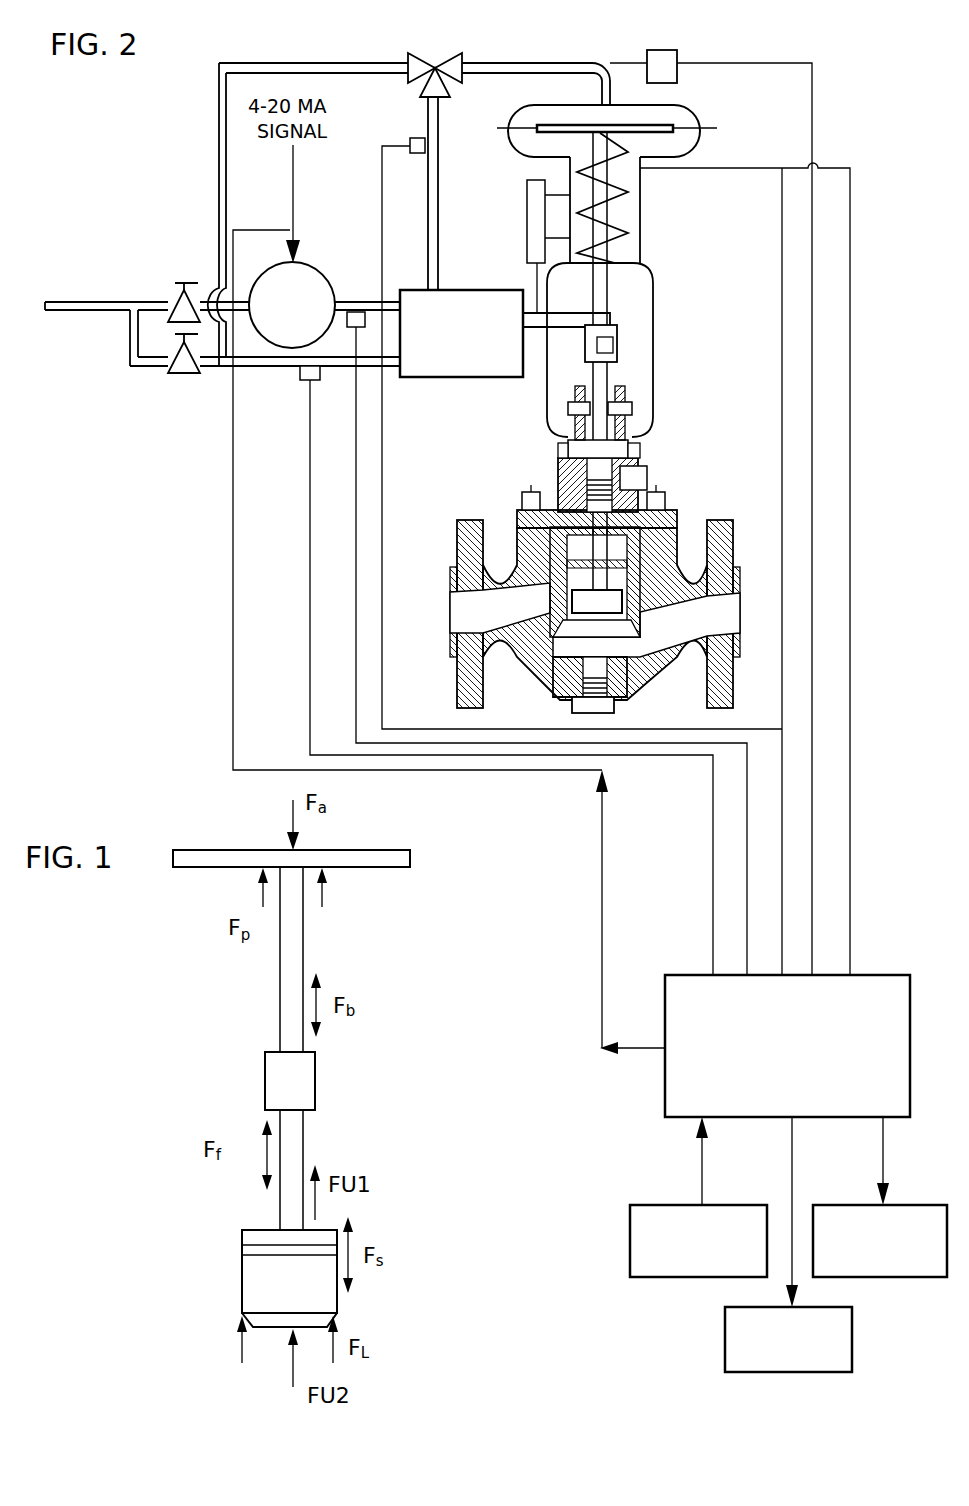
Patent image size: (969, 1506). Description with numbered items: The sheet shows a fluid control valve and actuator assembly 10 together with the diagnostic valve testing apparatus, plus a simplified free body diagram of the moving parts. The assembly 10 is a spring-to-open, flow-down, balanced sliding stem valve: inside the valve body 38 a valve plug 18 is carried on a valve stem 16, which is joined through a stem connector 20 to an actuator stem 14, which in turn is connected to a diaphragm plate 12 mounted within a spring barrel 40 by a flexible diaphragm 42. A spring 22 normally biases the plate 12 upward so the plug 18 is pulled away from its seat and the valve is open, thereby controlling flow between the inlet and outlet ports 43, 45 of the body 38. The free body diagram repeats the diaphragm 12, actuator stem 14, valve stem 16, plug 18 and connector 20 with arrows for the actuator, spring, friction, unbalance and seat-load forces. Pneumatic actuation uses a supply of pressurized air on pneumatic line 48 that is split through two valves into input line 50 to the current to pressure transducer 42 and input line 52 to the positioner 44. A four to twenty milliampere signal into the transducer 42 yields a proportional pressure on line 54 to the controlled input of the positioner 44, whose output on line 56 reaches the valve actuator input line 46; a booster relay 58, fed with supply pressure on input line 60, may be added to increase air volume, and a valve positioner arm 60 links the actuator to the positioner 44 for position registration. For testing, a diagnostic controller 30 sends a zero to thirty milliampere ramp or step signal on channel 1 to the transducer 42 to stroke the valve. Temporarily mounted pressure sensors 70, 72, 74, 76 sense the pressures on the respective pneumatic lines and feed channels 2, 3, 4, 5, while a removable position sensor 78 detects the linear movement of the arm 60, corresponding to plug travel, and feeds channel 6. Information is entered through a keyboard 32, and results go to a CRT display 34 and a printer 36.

In FIG. 2, the fluid control valve and actuator assembly 10 is at (753, 50).
In FIG. 2, the diaphragm plate 12 is at (663, 125).
In FIG. 1, the diaphragm plate 12 is at (375, 856).
In FIG. 2, the actuator stem 14 is at (603, 297).
In FIG. 1, the actuator stem 14 is at (293, 953).
In FIG. 2, the valve stem 16 is at (607, 388).
In FIG. 1, the valve stem 16 is at (297, 1153).
In FIG. 2, the valve plug 18 is at (607, 606).
In FIG. 1, the valve plug 18 is at (317, 1300).
In FIG. 2, the stem connector 20 is at (614, 347).
In FIG. 1, the stem connector 20 is at (307, 1092).
In FIG. 2, the spring 22 is at (620, 235).
In FIG. 2, the diagnostic controller 30 is at (880, 990).
In FIG. 2, the keyboard 32 is at (640, 1215).
In FIG. 2, the CRT display 34 is at (727, 1330).
In FIG. 2, the printer 36 is at (838, 1215).
In FIG. 2, the valve body 38 is at (453, 527).
In FIG. 2, the spring barrel 40 is at (645, 195).
In FIG. 2, the current to pressure transducer 42 is at (306, 262).
In FIG. 2, the inlet port 43 is at (460, 610).
In FIG. 2, the positioner 44 is at (460, 298).
In FIG. 2, the outlet port 45 is at (733, 612).
In FIG. 2, the valve actuator input line 46 is at (598, 68).
In FIG. 2, the pneumatic supply line 48 is at (72, 313).
In FIG. 2, the transducer input pneumatic line 50 is at (243, 300).
In FIG. 2, the positioner input pneumatic line 52 is at (262, 368).
In FIG. 2, the transducer output line 54 is at (389, 298).
In FIG. 2, the positioner output line 56 is at (436, 206).
In FIG. 2, the booster relay 58 is at (413, 55).
In FIG. 2, the booster relay input line / valve positioner arm 60 is at (287, 63).
In FIG. 2, the pressure sensor 70 is at (312, 388).
In FIG. 2, the pressure sensor 72 is at (355, 312).
In FIG. 2, the pressure sensor 74 is at (413, 138).
In FIG. 2, the pressure sensor 76 is at (657, 50).
In FIG. 2, the position sensor 78 is at (527, 200).
In FIG. 2, the current signal output channel 1 is at (659, 1048).
In FIG. 2, the input channel 2 is at (713, 908).
In FIG. 2, the input channel 3 is at (747, 914).
In FIG. 2, the input channel 4 is at (782, 915).
In FIG. 2, the input channel 5 is at (813, 915).
In FIG. 2, the input channel 6 is at (850, 912).